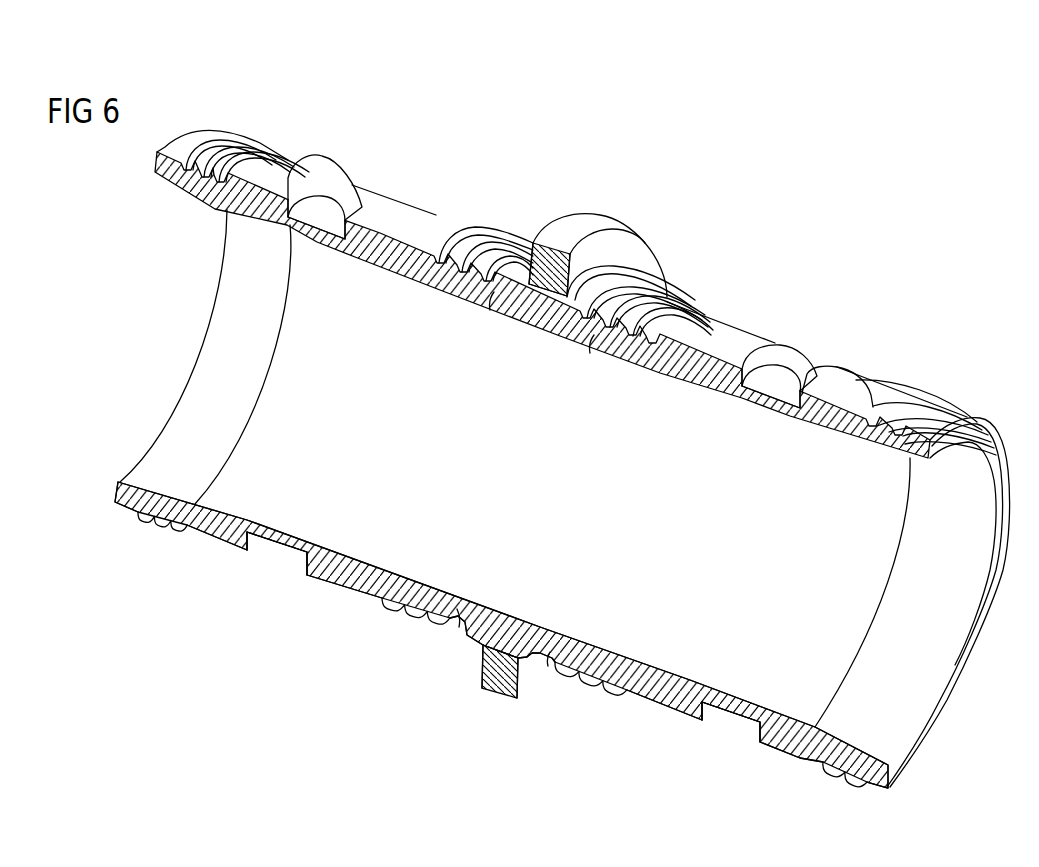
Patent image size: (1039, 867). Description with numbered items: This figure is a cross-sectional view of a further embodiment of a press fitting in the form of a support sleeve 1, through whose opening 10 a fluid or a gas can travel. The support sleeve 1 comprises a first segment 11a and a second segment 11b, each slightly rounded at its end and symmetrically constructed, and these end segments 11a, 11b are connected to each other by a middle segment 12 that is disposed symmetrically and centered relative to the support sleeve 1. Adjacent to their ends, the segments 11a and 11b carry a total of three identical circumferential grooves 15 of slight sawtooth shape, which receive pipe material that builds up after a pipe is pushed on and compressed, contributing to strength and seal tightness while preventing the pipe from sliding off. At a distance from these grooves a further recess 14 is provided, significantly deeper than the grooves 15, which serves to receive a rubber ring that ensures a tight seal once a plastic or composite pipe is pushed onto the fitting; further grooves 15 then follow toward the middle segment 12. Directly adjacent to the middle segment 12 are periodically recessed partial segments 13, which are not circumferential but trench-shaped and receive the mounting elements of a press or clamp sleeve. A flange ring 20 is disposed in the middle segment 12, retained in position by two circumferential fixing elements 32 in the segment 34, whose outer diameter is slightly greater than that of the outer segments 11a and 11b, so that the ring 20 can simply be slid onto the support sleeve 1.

The support sleeve 1 is at (548, 459).
The opening 10 is at (937, 669).
The first segment 11a is at (303, 172).
The second segment 11b is at (858, 378).
The middle segment 12 is at (516, 595).
The recessed partial segments 13 is at (495, 293).
The recess 14 is at (318, 236).
The circumferential grooves 15 is at (266, 132).
The flange ring 20 is at (625, 210).
The circumferential fixing elements 32 is at (566, 308).
The segment 34 is at (545, 303).